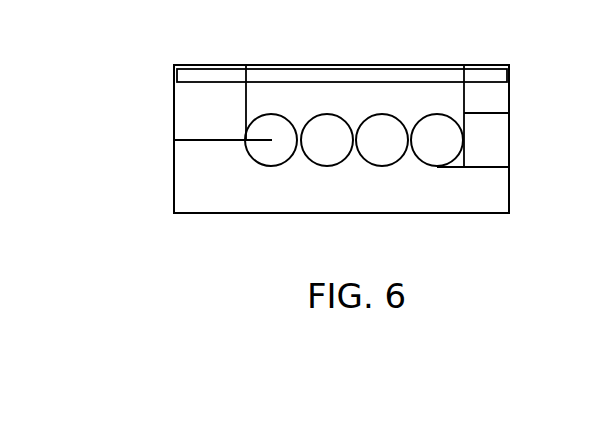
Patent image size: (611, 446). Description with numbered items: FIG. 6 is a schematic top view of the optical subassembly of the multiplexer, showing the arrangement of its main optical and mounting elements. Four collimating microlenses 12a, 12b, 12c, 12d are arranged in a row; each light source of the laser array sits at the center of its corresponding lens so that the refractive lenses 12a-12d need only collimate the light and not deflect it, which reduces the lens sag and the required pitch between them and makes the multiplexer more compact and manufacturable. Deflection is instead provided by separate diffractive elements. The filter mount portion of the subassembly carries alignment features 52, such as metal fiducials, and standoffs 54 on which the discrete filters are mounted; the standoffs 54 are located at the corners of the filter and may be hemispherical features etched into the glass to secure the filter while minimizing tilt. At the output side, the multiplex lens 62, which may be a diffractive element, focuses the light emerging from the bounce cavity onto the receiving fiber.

The microlens 12a is at (275, 163).
The microlens 12b is at (327, 163).
The microlens 12c is at (387, 163).
The microlens 12d is at (440, 163).
The alignment feature 52 is at (478, 107).
The standoff 54 is at (452, 125).
The multiplex lens 62 is at (208, 126).